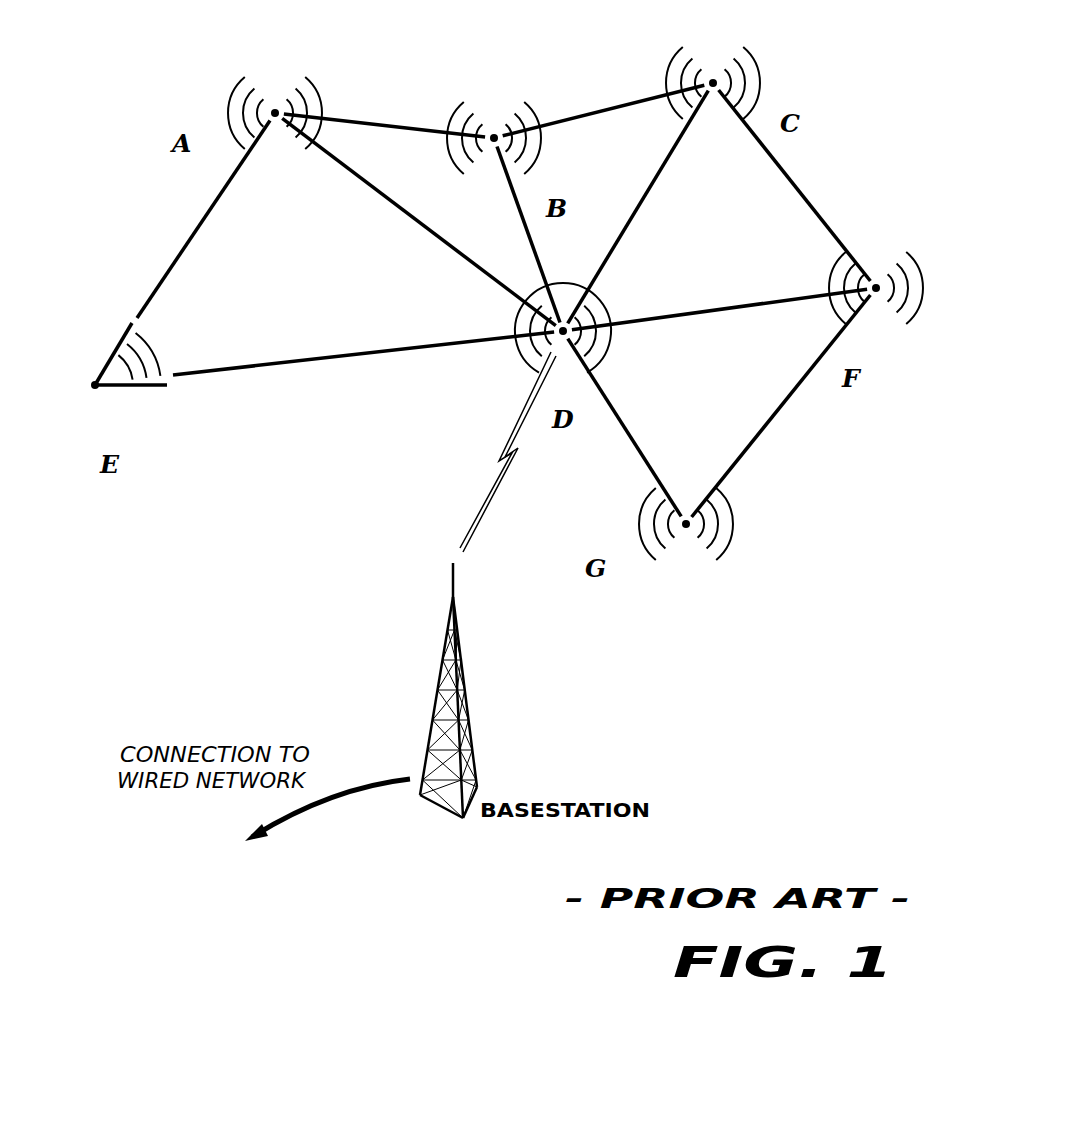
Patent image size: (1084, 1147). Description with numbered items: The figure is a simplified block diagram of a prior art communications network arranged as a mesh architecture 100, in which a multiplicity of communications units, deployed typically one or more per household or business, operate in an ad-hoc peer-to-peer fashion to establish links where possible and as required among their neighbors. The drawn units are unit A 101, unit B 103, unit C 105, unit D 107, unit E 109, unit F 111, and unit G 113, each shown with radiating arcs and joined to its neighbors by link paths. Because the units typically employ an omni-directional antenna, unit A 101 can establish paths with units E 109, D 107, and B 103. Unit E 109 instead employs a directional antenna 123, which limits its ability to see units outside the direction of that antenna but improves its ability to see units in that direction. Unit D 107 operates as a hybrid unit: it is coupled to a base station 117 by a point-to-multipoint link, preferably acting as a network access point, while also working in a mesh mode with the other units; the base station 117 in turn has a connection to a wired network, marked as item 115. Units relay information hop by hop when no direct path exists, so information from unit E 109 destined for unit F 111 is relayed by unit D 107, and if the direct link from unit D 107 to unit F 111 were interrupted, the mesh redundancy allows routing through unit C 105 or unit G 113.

The mesh architecture 100 is at (877, 821).
The communications unit A 101 is at (205, 87).
The communications unit B 103 is at (511, 84).
The communications unit C 105 is at (776, 47).
The communications unit D 107 is at (508, 379).
The communications unit E 109 is at (117, 351).
The communications unit F 111 is at (890, 224).
The communications unit G 113 is at (607, 524).
The connection to wired network 115 is at (322, 803).
The base station 117 is at (440, 693).
The directional antenna 123 is at (128, 388).